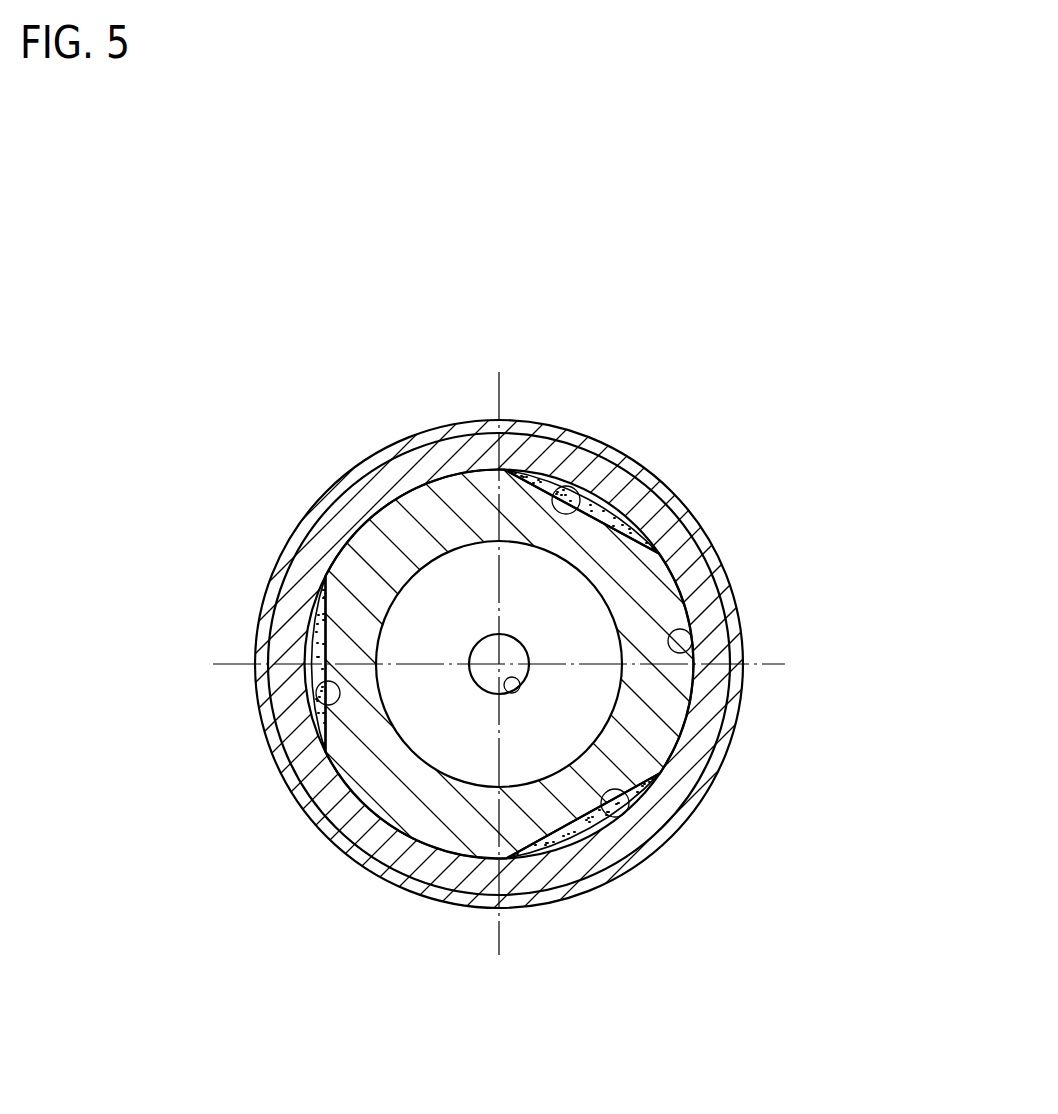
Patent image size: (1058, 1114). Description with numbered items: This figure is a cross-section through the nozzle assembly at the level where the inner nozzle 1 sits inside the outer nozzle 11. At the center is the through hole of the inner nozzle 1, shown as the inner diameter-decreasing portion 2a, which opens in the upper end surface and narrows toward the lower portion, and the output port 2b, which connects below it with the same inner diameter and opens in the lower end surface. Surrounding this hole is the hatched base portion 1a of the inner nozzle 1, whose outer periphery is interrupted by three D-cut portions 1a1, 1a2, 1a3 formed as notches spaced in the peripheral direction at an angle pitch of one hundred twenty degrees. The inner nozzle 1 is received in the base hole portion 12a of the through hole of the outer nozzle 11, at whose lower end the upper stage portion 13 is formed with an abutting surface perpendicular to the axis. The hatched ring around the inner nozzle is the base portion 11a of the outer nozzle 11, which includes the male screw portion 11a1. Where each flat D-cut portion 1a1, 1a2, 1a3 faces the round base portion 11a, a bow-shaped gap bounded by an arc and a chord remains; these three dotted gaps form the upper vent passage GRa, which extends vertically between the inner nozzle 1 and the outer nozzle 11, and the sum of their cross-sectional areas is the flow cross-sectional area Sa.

The inner nozzle 1 is at (529, 669).
The base portion 1a is at (692, 718).
The D-cut portion 1a1 is at (312, 630).
The D-cut portion 1a2 is at (612, 506).
The D-cut portion 1a3 is at (597, 840).
The outer nozzle 11 is at (710, 537).
The base portion 11a is at (615, 664).
The male screw portion 11a1 is at (720, 562).
The base hole portion 12a is at (692, 650).
The upper stage portion 13 is at (585, 494).
The upper vent passage GRa is at (560, 488).
The inner diameter-decreasing portion 2a is at (607, 715).
The output port 2b is at (520, 692).